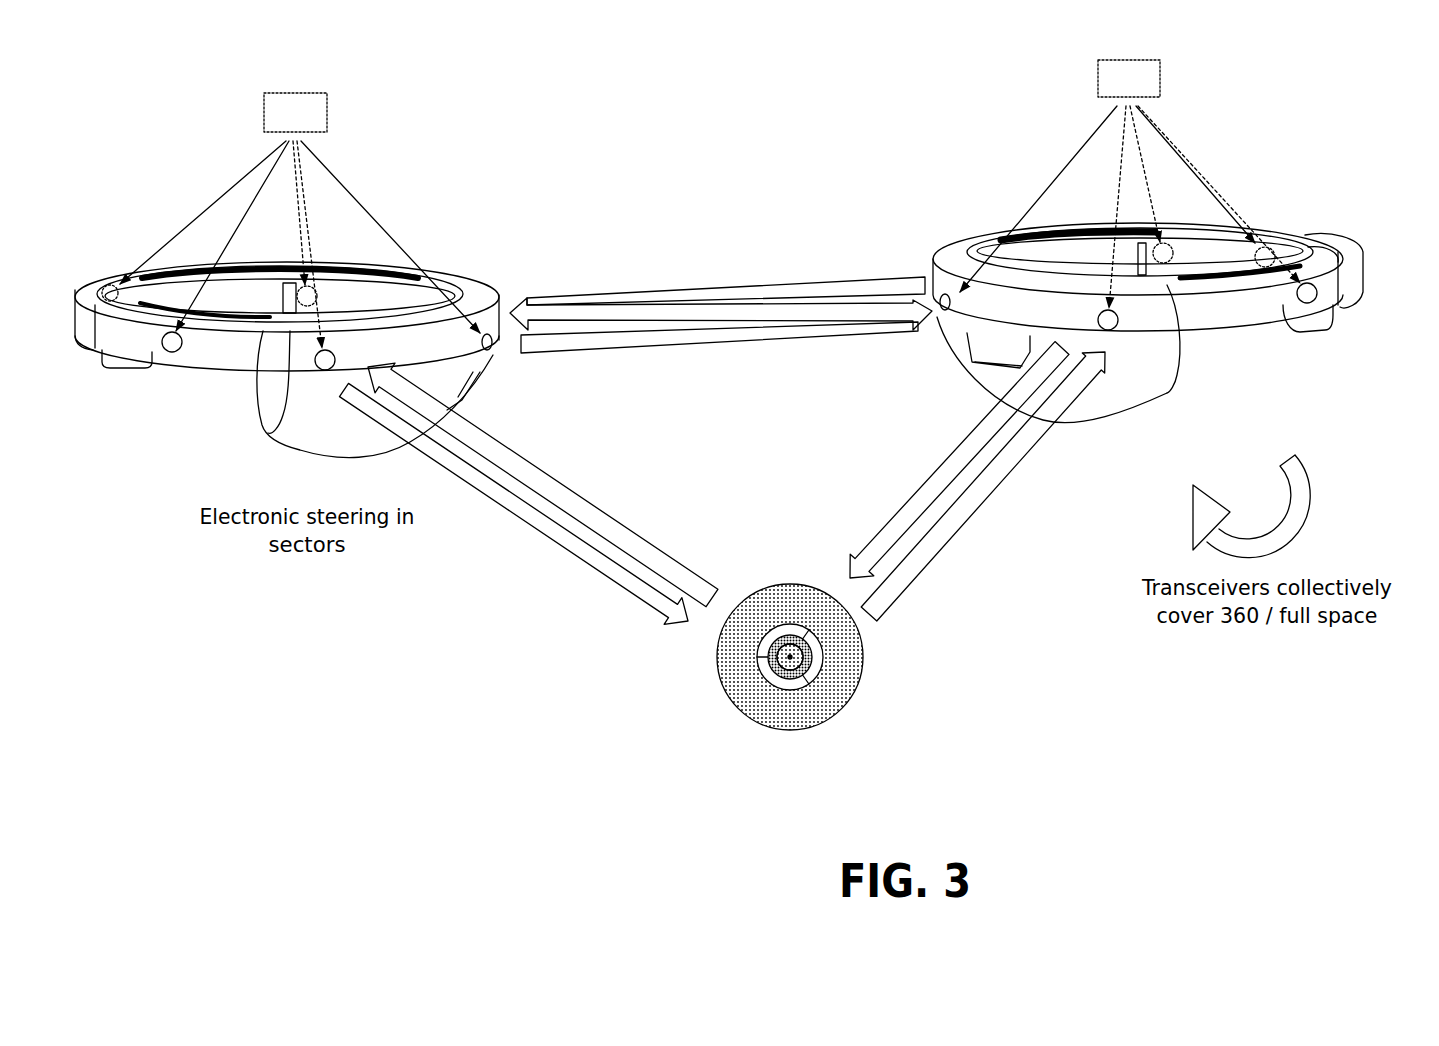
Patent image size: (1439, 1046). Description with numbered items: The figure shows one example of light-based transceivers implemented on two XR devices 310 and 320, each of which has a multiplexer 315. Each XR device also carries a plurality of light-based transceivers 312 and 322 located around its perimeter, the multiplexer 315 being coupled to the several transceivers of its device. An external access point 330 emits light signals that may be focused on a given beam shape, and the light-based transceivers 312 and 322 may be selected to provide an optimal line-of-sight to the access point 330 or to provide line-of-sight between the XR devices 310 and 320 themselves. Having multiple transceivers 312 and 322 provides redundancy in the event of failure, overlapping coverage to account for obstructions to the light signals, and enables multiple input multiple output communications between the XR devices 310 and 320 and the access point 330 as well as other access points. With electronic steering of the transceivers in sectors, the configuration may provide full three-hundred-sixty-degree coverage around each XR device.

The XR device 310 is at (500, 240).
The light-based transceivers 312 is at (133, 283).
The multiplexer 315 is at (350, 114).
The XR device 320 is at (1363, 118).
The light-based transceivers 322 is at (1160, 237).
The external access point 330 is at (885, 695).